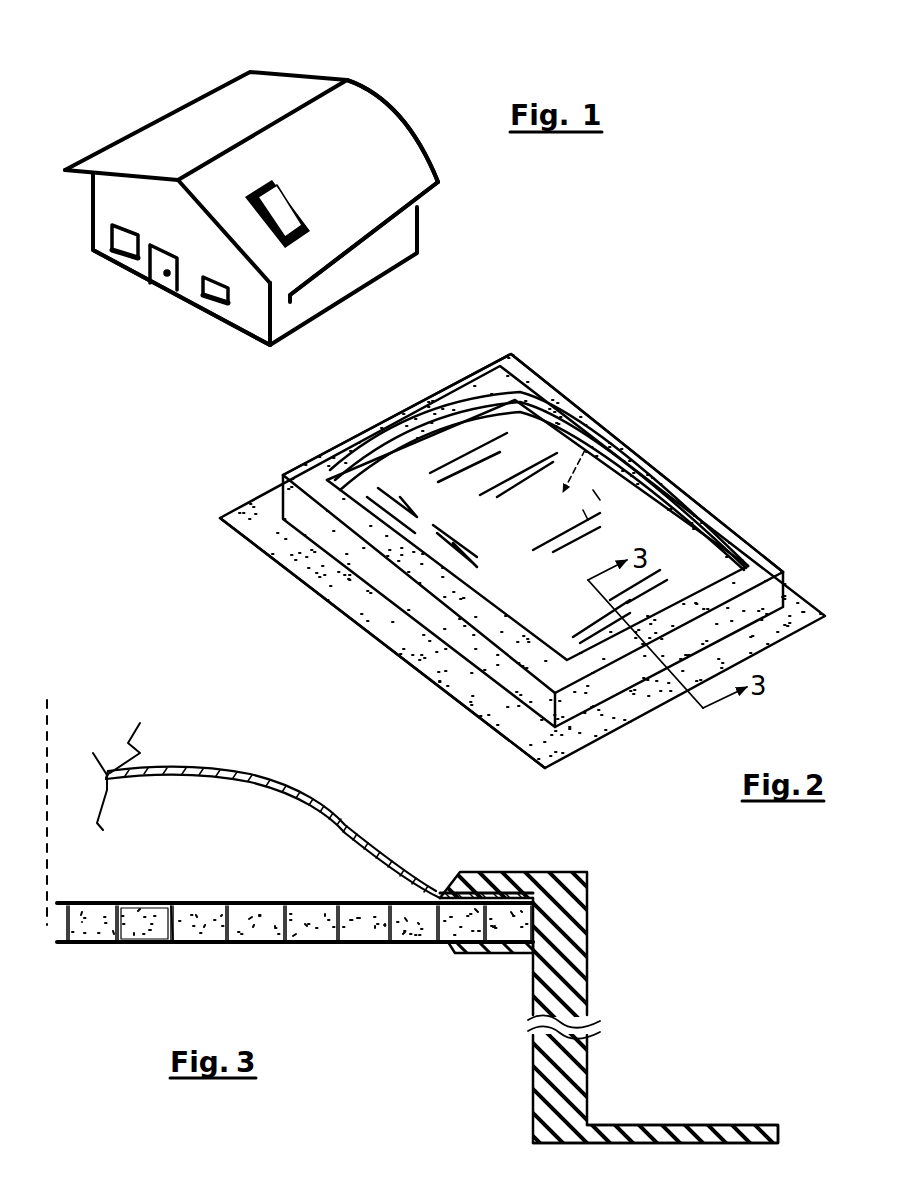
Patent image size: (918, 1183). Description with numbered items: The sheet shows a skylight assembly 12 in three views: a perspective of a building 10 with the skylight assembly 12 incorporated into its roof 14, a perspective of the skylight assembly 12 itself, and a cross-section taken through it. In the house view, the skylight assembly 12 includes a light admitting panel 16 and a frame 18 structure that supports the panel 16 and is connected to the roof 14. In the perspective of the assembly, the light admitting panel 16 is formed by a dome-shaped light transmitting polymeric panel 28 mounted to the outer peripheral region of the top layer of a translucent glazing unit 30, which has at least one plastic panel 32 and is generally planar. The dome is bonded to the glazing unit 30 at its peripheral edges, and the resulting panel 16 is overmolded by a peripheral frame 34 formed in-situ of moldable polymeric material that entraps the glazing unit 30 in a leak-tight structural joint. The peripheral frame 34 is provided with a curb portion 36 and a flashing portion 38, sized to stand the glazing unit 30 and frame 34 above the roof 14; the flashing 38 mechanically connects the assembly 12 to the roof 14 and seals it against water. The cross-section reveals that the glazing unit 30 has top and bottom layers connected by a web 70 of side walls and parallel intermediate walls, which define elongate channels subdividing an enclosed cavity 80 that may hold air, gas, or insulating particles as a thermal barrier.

In FIG. 1, the building 10 is at (390, 106).
In FIG. 1, the skylight assembly 12 is at (256, 182).
In FIG. 2, the skylight assembly 12 is at (767, 440).
In FIG. 3, the skylight assembly 12 is at (300, 790).
In FIG. 1, the roof 14 is at (403, 182).
In FIG. 1, the light admitting panel 16 is at (277, 205).
In FIG. 2, the light admitting panel 16 is at (477, 437).
In FIG. 1, the frame structure 18 is at (252, 223).
In FIG. 2, the light transmitting polymeric panel 28 is at (573, 403).
In FIG. 2, the translucent glazing unit 30 is at (617, 423).
In FIG. 3, the translucent glazing unit 30 is at (109, 900).
In FIG. 2, the plastic panel 32 is at (647, 440).
In FIG. 2, the peripheral frame 34 is at (333, 450).
In FIG. 2, the curb portion 36 is at (313, 523).
In FIG. 3, the curb portion 36 is at (587, 983).
In FIG. 2, the flashing portion 38 is at (377, 633).
In FIG. 3, the flashing portion 38 is at (643, 1125).
In FIG. 3, the web 70 is at (173, 933).
In FIG. 3, the cavity 80 is at (140, 923).